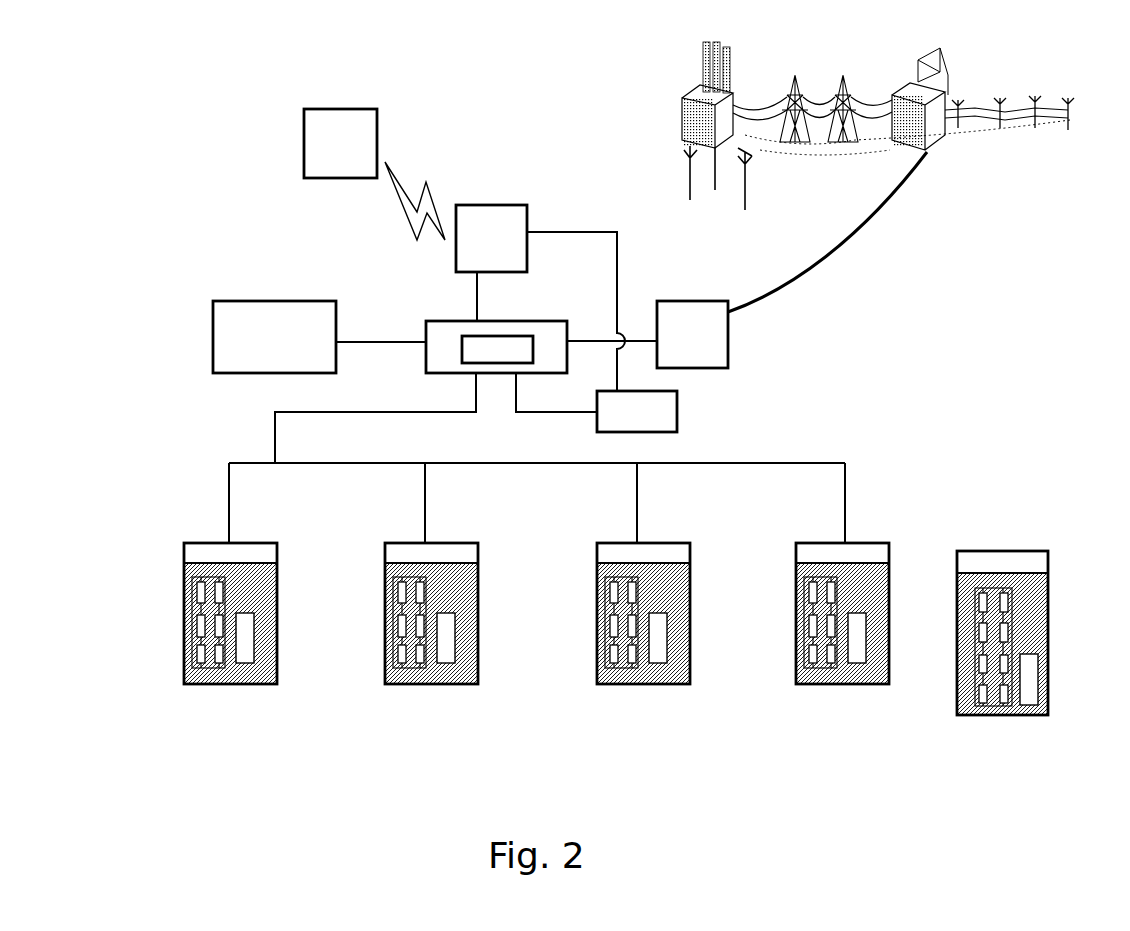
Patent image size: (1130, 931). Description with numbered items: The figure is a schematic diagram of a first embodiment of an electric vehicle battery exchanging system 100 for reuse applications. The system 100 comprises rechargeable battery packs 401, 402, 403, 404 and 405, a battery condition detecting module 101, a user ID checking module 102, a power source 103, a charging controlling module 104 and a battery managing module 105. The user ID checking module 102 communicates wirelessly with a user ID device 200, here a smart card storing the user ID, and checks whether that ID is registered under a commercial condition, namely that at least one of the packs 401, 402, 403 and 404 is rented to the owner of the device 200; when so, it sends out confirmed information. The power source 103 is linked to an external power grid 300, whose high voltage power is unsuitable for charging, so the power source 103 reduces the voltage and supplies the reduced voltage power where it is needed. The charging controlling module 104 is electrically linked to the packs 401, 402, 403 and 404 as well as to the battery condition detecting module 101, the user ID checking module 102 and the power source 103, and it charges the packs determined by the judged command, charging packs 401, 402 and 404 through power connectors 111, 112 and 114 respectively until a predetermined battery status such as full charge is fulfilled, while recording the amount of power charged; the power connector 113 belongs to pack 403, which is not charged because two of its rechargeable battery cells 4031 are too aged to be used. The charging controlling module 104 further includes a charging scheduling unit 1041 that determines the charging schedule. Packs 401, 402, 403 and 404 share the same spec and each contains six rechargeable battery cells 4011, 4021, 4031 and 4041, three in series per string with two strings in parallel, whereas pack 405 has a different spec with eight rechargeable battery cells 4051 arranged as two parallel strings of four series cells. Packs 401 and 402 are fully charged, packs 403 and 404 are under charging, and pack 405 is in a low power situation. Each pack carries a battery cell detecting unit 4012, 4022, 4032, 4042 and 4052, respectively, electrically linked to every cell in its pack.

The electric vehicle battery exchanging system 100 is at (571, 440).
The user ID device 200 is at (304, 133).
The battery condition detecting module 101 is at (227, 301).
The user ID checking module 102 is at (500, 205).
The power source 103 is at (728, 325).
The charging controlling module 104 is at (426, 328).
The charging scheduling unit 1041 is at (510, 336).
The battery managing module 105 is at (677, 407).
The power grid 300 is at (958, 128).
The power connector 111 is at (184, 556).
The power connector 112 is at (381, 599).
The power connector 113 is at (593, 599).
The power connector 114 is at (792, 599).
The rechargeable battery pack 401 is at (184, 667).
The rechargeable battery cells 4011 is at (218, 668).
The battery cell detecting unit 4012 is at (245, 663).
The rechargeable battery pack 402 is at (378, 648).
The rechargeable battery cells 4021 is at (383, 670).
The battery cell detecting unit 4022 is at (442, 705).
The rechargeable battery pack 403 is at (590, 648).
The rechargeable battery cells 4031 is at (595, 670).
The battery cell detecting unit 4032 is at (654, 705).
The rechargeable battery pack 404 is at (789, 648).
The rechargeable battery cells 4041 is at (794, 670).
The battery cell detecting unit 4042 is at (853, 705).
The rechargeable battery pack 405 is at (957, 670).
The rechargeable battery cells 4051 is at (1002, 706).
The battery cell detecting unit 4052 is at (1027, 705).